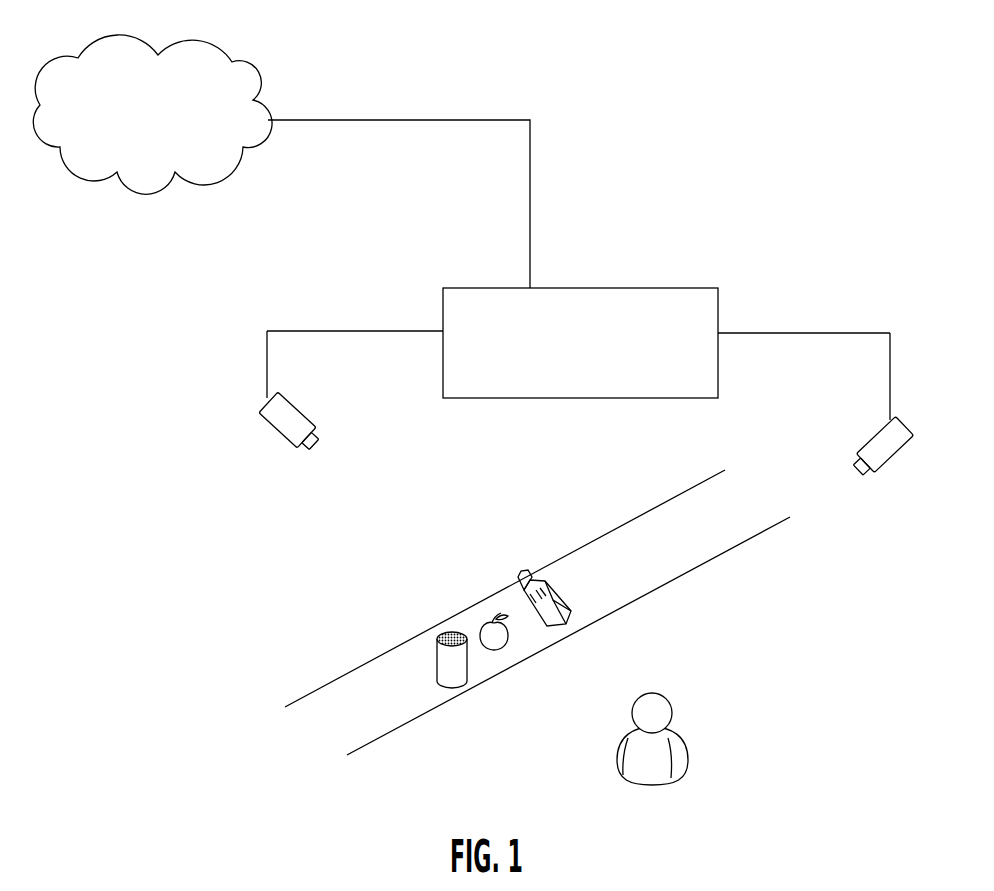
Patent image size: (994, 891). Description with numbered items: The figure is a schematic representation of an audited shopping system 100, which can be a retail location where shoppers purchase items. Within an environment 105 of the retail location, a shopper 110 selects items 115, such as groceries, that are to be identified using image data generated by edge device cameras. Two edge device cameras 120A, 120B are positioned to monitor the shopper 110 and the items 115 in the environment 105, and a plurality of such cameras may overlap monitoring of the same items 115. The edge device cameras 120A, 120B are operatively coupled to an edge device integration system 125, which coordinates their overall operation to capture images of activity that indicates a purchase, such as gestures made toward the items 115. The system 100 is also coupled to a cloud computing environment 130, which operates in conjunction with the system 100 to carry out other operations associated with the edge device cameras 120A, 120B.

The audited shopping system 100 is at (750, 66).
The environment 105 is at (268, 552).
The shopper 110 is at (683, 742).
The item 115 is at (517, 562).
The edge device camera 120A is at (291, 375).
The edge device camera 120B is at (879, 387).
The edge device integration system 125 is at (588, 388).
The cloud computing environment 130 is at (168, 145).